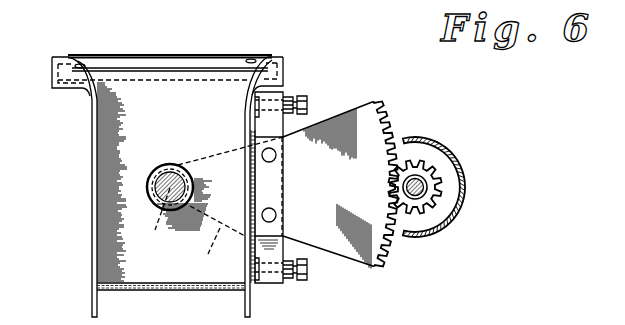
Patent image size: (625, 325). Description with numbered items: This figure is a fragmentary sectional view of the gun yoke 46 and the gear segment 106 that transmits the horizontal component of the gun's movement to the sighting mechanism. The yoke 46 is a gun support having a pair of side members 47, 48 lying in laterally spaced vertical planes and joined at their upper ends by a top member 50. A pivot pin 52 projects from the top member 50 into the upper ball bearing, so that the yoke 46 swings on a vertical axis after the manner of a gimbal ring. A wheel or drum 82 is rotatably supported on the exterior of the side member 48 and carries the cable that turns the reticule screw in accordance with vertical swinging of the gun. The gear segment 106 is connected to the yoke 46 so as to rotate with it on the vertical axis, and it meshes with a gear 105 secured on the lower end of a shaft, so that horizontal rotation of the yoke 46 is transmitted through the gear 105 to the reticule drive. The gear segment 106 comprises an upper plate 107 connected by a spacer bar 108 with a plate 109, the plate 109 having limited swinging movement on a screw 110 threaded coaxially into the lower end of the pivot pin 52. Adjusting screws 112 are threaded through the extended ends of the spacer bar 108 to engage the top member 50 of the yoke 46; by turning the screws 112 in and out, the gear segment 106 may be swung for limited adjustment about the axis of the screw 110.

The gun yoke 46 is at (88, 246).
The side member 47 is at (166, 292).
The side member 48 is at (127, 77).
The top member 50 is at (130, 160).
The pivot pin 52 is at (172, 187).
The wheel or drum 82 is at (207, 55).
The gear 105 is at (442, 178).
The gear segment 106 is at (387, 241).
The upper plate 107 is at (335, 112).
The spacer bar 108 is at (270, 260).
The plate 109 is at (230, 208).
The screw 110 is at (155, 220).
The adjusting screws 112 is at (305, 97).